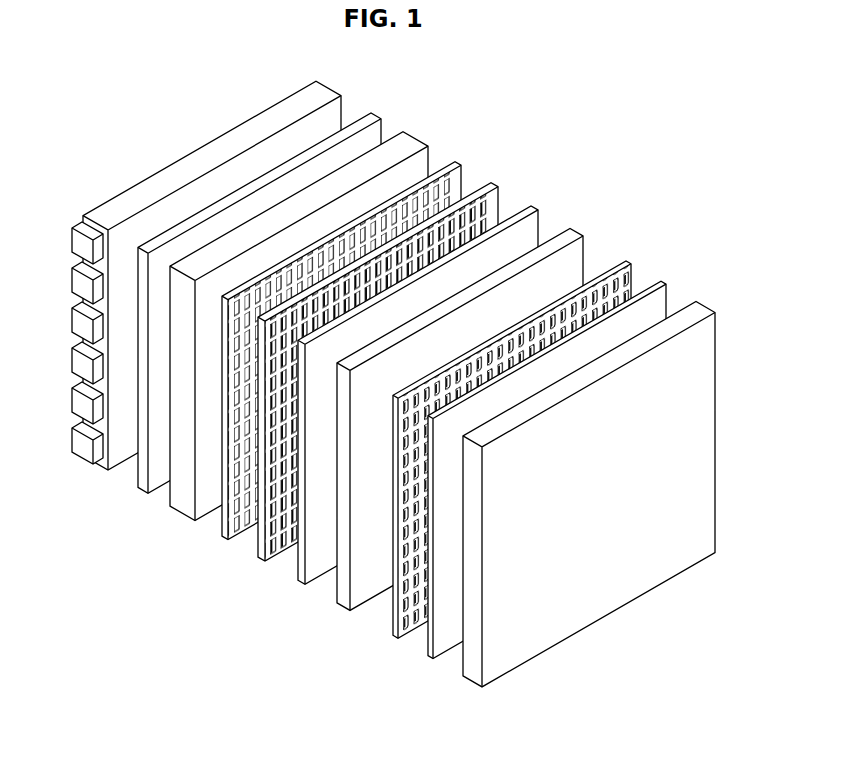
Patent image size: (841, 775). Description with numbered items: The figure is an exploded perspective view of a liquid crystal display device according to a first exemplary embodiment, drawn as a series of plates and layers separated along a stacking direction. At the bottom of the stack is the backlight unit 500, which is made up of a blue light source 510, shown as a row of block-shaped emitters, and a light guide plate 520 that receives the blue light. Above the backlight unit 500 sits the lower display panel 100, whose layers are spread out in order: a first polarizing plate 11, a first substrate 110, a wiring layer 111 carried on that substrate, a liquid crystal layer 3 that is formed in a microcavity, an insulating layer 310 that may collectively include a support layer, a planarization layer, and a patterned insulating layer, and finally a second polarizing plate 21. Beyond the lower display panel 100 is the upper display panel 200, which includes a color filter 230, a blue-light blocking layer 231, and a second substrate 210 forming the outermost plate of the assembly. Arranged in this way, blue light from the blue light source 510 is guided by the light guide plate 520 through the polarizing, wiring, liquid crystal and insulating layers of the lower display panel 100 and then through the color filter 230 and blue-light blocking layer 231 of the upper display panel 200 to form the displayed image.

The backlight unit 500 is at (193, 275).
The blue light source 510 is at (80, 244).
The light guide plate 520 is at (130, 202).
The lower display panel 100 is at (340, 383).
The first polarizing plate 11 is at (142, 473).
The first substrate 110 is at (183, 505).
The wiring layer 111 is at (225, 522).
The liquid crystal layer 3 is at (258, 547).
The insulating layer 310 is at (300, 568).
The second polarizing plate 21 is at (448, 440).
The upper display panel 200 is at (540, 496).
The color filter 230 is at (387, 640).
The blue-light blocking layer 231 is at (430, 648).
The second substrate 210 is at (581, 515).